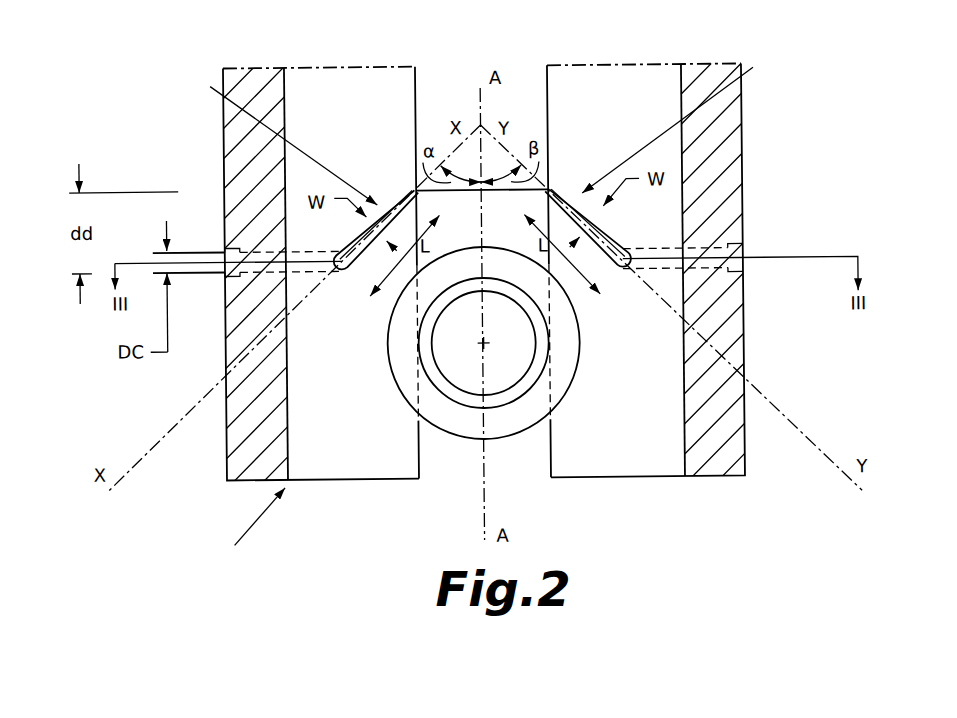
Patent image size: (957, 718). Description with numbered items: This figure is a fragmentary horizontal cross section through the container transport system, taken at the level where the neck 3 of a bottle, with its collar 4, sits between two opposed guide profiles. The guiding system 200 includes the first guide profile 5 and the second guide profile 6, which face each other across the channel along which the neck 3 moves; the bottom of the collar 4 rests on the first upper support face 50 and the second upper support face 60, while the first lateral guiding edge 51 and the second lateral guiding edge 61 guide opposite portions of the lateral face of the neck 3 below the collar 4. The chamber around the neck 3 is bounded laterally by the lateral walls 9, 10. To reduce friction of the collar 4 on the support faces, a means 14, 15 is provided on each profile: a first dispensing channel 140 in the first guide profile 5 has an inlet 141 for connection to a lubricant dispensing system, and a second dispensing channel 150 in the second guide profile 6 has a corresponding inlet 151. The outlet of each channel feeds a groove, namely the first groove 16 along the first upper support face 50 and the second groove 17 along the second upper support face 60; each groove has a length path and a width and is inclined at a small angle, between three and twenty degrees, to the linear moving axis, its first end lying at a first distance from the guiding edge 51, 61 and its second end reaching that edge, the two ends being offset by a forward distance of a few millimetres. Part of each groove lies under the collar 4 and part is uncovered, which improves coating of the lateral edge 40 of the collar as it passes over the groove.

The neck 3 is at (453, 390).
The collar 4 is at (463, 413).
The lateral edge of the collar portion 40 is at (519, 433).
The first guide profile 5 is at (333, 479).
The second guide profile 6 is at (632, 479).
The lateral wall 9 is at (243, 441).
The lateral wall 10 is at (726, 444).
The means for reducing friction 14 is at (281, 136).
The means for reducing friction 15 is at (686, 121).
The first groove 16 is at (357, 241).
The second groove 17 is at (615, 233).
The first upper support face 50 is at (358, 97).
The first lateral guiding edge 51 is at (417, 100).
The second upper support face 60 is at (605, 97).
The second lateral guiding edge 61 is at (549, 100).
The first dispensing channel 140 is at (257, 281).
The inlet 141 is at (224, 245).
The second dispensing channel 150 is at (697, 269).
The inlet 151 is at (743, 240).
The guiding system 200 is at (241, 533).